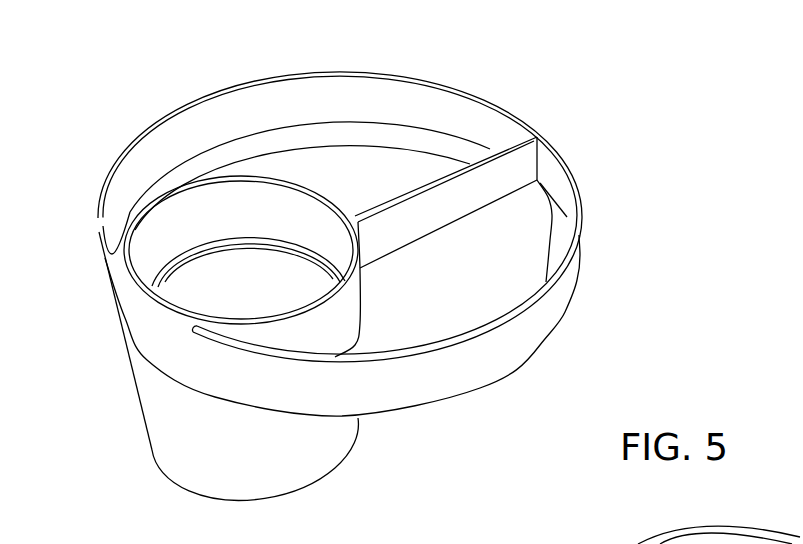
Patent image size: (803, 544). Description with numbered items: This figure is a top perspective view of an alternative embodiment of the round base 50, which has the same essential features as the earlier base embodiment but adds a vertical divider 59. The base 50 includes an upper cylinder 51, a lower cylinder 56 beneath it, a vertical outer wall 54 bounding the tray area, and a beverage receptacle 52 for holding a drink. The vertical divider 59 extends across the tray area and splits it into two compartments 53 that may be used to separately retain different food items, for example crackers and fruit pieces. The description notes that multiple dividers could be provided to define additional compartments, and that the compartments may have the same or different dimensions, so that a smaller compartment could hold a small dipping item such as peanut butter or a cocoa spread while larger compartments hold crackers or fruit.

The round base 50 is at (556, 85).
The upper cylinder 51 is at (162, 239).
The beverage receptacle 52 is at (225, 307).
The compartments 53 is at (445, 326).
The vertical outer wall 54 is at (508, 357).
The lower cylinder 56 is at (193, 436).
The vertical divider 59 is at (525, 160).